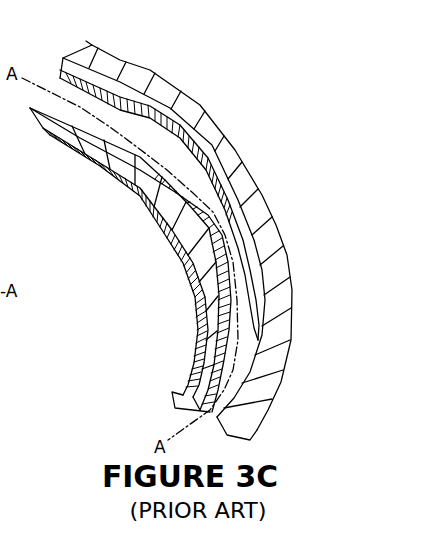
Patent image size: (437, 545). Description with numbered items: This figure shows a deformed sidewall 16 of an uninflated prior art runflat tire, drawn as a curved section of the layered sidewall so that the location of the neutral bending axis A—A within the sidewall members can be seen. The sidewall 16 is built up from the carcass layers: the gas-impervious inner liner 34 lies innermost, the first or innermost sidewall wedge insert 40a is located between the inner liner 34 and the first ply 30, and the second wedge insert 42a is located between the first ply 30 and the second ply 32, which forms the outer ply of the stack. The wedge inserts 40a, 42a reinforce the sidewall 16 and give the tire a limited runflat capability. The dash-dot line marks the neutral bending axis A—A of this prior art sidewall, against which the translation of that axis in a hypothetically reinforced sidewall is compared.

The sidewall portion 16 is at (284, 214).
The first ply 30 is at (180, 256).
The second ply 32 is at (264, 313).
The inner liner 34 is at (195, 313).
The first sidewall wedge insert 40a is at (205, 266).
The second insert 42a is at (252, 270).